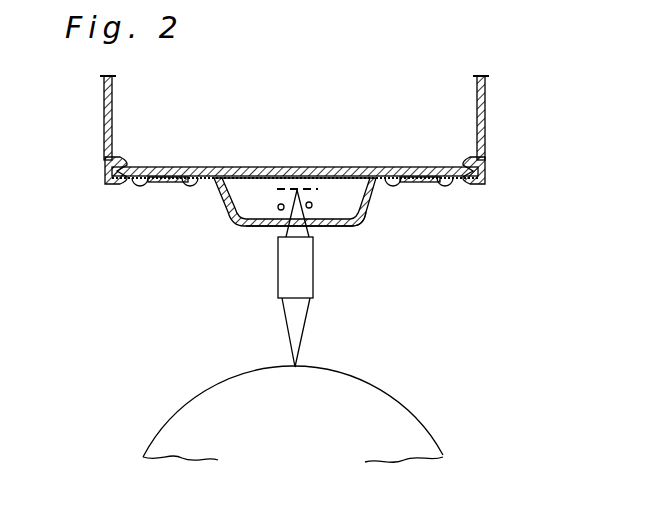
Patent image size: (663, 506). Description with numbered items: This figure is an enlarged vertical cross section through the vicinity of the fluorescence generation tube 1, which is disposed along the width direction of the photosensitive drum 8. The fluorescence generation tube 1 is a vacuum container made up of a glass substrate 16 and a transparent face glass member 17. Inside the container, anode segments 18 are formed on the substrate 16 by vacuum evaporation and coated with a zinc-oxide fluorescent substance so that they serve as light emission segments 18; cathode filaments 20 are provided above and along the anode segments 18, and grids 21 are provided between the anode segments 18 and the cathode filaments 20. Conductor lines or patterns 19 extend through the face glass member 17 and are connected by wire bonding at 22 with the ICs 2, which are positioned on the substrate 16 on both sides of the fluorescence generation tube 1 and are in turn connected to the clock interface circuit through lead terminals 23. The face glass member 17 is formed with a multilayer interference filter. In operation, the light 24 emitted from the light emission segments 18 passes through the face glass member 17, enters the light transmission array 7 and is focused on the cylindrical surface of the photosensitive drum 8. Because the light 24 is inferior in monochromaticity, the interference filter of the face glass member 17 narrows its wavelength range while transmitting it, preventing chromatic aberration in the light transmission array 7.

The fluorescence generation tube 1 is at (346, 197).
The ICs 2 is at (140, 190).
The light transmission array 7 is at (313, 278).
The photosensitive drum 8 is at (397, 400).
The substrate 16 is at (240, 168).
The face glass member 17 is at (256, 228).
The anode segments 18 is at (298, 188).
The conductor lines or patterns 19 is at (284, 168).
The cathode filaments 20 is at (312, 207).
The grids 21 is at (346, 226).
The wire bonding 22 is at (190, 190).
The lead terminals 23 is at (104, 114).
The light 24 is at (272, 206).